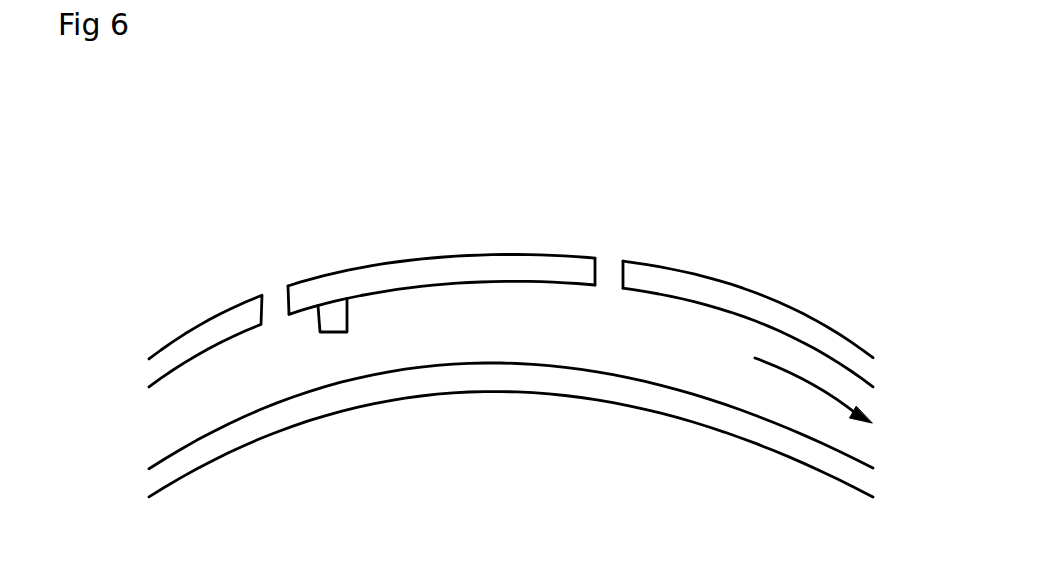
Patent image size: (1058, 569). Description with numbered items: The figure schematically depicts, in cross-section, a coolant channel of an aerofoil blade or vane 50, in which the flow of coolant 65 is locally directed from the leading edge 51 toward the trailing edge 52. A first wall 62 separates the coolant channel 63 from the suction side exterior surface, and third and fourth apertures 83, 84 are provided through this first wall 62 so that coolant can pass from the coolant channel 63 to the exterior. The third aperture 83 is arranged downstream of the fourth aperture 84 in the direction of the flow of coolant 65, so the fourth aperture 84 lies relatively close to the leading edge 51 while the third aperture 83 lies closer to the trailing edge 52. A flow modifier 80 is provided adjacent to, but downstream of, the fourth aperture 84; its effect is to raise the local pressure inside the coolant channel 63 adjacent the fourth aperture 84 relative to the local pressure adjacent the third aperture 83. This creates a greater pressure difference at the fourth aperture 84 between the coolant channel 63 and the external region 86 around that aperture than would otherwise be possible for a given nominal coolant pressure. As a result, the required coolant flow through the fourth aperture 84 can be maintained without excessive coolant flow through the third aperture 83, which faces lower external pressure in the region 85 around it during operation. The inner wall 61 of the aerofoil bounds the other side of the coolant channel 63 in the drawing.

The aerofoil blade or vane 50 is at (740, 135).
The leading edge 51 is at (122, 415).
The trailing edge 52 is at (900, 413).
The inner layer 61 is at (596, 400).
The first wall 62 is at (772, 298).
The coolant channel 63 is at (705, 358).
The flow of coolant 65 is at (832, 398).
The flow modifier 80 is at (333, 315).
The third aperture 83 is at (611, 273).
The fourth aperture 84 is at (278, 302).
The region around the third aperture 85 is at (593, 257).
The region around the fourth aperture 86 is at (298, 282).